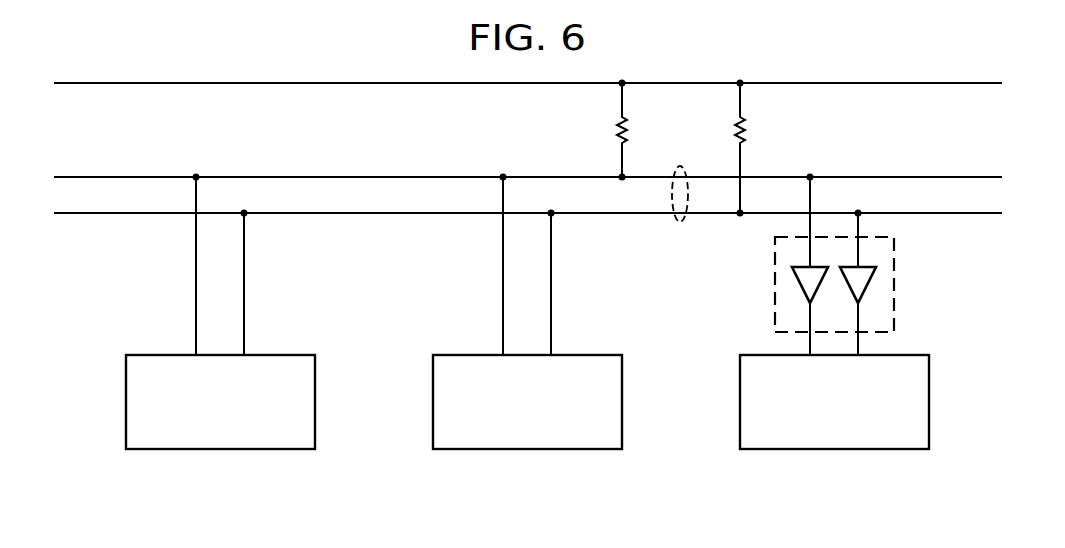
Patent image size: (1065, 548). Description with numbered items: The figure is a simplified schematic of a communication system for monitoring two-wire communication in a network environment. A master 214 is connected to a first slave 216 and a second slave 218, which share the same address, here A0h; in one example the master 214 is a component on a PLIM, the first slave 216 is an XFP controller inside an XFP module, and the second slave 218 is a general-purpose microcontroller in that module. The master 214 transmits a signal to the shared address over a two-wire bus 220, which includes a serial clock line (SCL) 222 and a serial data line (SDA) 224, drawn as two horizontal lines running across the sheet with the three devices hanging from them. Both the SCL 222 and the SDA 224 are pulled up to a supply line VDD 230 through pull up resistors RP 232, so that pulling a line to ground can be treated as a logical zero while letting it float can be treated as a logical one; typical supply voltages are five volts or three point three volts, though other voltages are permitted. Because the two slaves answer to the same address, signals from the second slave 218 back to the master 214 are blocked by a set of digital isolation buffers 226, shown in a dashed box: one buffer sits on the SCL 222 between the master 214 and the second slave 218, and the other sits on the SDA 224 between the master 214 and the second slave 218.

The master 214 is at (221, 450).
The first slave 216 is at (527, 450).
The second slave 218 is at (834, 450).
The two-wire bus 220 is at (680, 223).
The serial clock line (SCL) 222 is at (371, 215).
The serial data line (SDA) 224 is at (371, 176).
The digital isolation buffers 226 is at (895, 298).
The supply line VDD 230 is at (371, 82).
The pull up resistors RP 232 is at (618, 128).